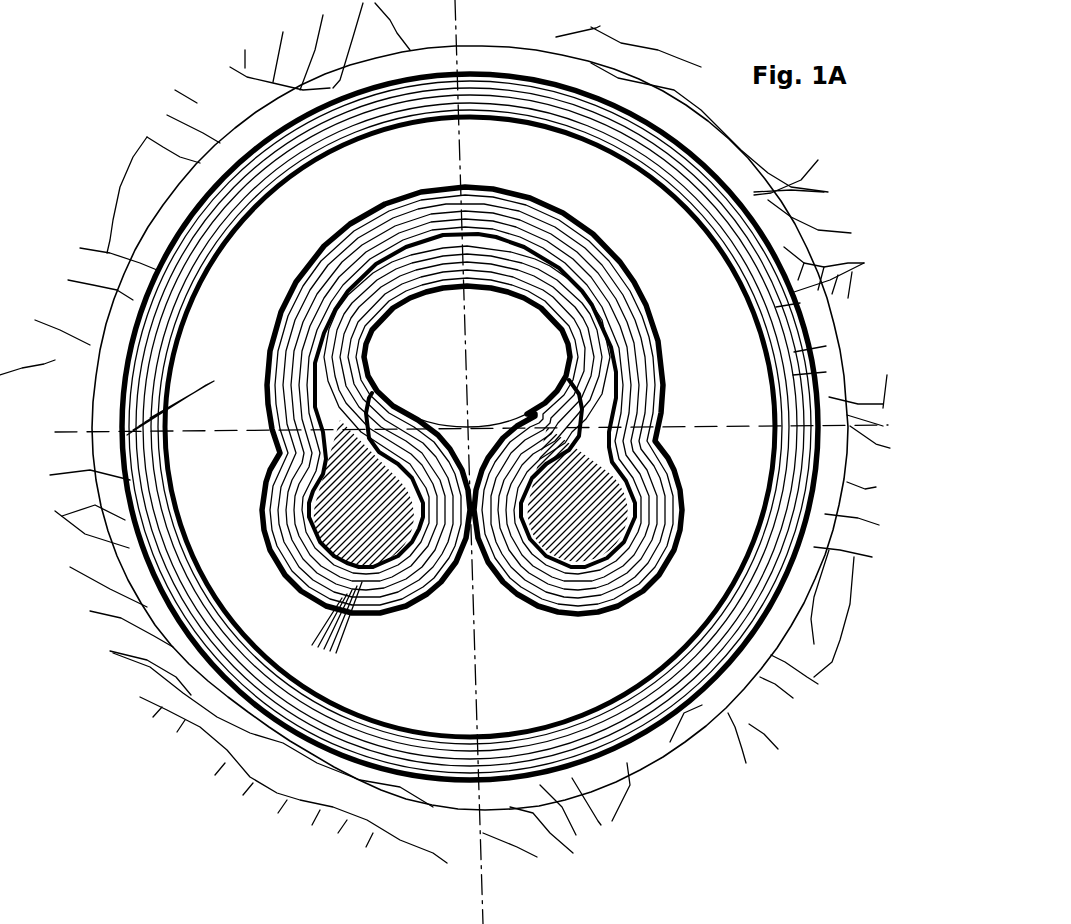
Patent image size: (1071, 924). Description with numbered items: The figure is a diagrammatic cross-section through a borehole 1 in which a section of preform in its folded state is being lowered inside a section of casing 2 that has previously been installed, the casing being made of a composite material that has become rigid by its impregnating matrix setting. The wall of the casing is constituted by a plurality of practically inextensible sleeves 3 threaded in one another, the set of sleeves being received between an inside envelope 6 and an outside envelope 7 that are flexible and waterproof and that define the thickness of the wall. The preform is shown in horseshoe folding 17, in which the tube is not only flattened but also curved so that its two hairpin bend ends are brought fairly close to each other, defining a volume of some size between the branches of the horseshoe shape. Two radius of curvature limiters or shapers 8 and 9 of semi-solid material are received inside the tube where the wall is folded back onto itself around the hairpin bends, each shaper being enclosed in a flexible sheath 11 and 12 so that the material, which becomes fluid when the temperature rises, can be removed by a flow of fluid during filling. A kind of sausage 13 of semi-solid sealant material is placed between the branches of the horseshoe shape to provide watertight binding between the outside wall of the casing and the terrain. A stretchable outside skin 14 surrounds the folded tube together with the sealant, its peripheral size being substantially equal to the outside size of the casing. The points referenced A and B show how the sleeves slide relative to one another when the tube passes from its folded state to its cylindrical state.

The borehole 1 is at (701, 67).
The casing 2 is at (804, 265).
The sleeves 3 is at (822, 338).
The inside envelope 6 is at (699, 218).
The outside envelope 7 is at (692, 97).
The radius of curvature limiter or shaper 8 is at (674, 448).
The radius of curvature limiter or shaper 9 is at (397, 598).
The flexible sheath 11 is at (293, 525).
The flexible sheath 12 is at (581, 557).
The sausage of semi-solid material 13 is at (497, 320).
The stretchable outside skin 14 is at (430, 417).
The horseshoe folding 17 is at (252, 551).
The point A is at (335, 632).
The point B is at (178, 407).